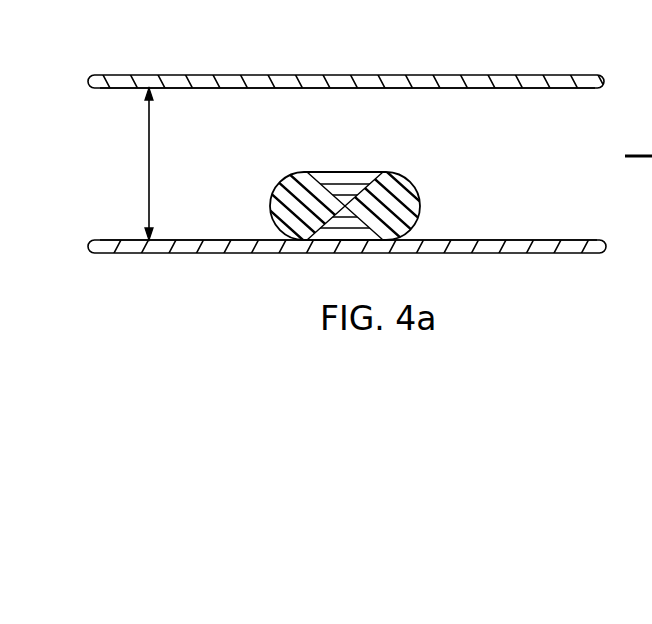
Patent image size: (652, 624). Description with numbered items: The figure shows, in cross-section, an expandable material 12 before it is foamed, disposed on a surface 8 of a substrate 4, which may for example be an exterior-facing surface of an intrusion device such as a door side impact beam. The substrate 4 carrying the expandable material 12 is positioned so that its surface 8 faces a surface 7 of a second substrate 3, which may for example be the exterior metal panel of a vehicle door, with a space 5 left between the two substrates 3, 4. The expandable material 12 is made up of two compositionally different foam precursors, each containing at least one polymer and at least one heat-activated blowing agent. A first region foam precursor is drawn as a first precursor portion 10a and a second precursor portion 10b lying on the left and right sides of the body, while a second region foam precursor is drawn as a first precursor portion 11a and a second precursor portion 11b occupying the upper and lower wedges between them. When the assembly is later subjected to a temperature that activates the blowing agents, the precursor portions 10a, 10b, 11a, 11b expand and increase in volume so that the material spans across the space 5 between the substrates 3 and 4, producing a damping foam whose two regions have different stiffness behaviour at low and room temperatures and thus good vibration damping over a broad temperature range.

The substrate 3 is at (545, 75).
The surface of substrate 7 is at (567, 88).
The substrate 4 is at (557, 253).
The surface of substrate 8 is at (557, 240).
The space 5 is at (149, 152).
The expandable material 12 is at (417, 163).
The first precursor portion of the first region 10a is at (283, 202).
The second precursor portion of the first region 10b is at (412, 202).
The first precursor portion of the second region 11a is at (335, 172).
The second precursor portion of the second region 11b is at (333, 238).